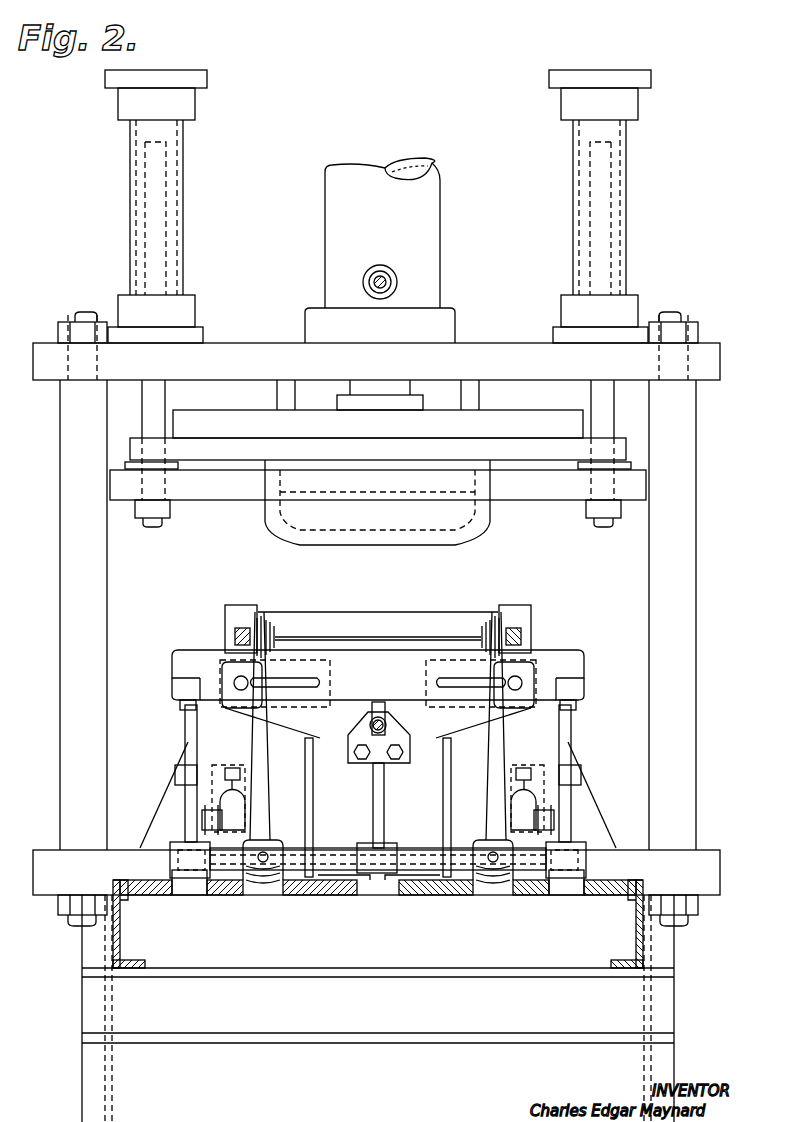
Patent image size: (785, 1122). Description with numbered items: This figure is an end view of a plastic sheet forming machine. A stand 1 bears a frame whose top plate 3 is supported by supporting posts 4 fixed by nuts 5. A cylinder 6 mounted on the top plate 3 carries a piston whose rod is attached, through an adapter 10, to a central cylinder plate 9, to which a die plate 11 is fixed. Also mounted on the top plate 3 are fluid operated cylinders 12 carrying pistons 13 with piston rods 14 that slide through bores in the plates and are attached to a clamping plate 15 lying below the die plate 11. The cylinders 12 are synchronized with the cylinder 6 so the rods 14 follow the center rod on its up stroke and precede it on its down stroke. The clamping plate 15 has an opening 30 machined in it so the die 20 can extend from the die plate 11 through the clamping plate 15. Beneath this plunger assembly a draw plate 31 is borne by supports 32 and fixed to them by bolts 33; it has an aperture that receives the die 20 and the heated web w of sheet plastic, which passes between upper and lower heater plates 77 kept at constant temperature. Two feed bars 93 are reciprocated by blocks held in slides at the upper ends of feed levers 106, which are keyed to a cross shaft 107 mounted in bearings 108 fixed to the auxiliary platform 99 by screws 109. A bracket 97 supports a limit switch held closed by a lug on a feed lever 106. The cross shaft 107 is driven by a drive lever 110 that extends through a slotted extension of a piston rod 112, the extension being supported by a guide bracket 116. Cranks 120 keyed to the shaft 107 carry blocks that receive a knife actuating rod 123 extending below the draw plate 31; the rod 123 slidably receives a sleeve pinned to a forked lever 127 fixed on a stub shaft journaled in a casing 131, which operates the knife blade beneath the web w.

The stand 1 is at (122, 930).
The top plate 3 is at (45, 350).
The supporting posts 4 is at (75, 472).
The nuts 5 is at (62, 325).
The cylinder 6 is at (345, 214).
The central cylinder plate 9 is at (222, 420).
The adapter 10 is at (372, 390).
The die plate 11 is at (222, 448).
The fluid operated cylinders 12 is at (136, 160).
The pistons 13 is at (130, 130).
The piston rods 14 is at (148, 190).
The clamping plate 15 is at (195, 500).
The die 20 is at (480, 512).
The opening 30 is at (250, 492).
The draw plate 31 is at (178, 662).
The supports 32 is at (180, 690).
The bolts 33 is at (182, 708).
The heater plates 77 is at (420, 630).
The web of sheet plastic material W is at (455, 635).
The feed bars 93 is at (238, 636).
The bracket 97 is at (405, 696).
The auxiliary platform 99 is at (378, 892).
The feed levers 106 is at (258, 748).
The cross shaft 107 is at (418, 858).
The bearings 108 is at (185, 848).
The screws 109 is at (186, 885).
The drive lever 110 is at (385, 786).
The piston rod 112 is at (388, 726).
The guide bracket 116 is at (362, 762).
The cranks 120 is at (205, 822).
The knife actuating rod 123 is at (240, 800).
The forked lever 127 is at (178, 790).
The casing 131 is at (190, 735).